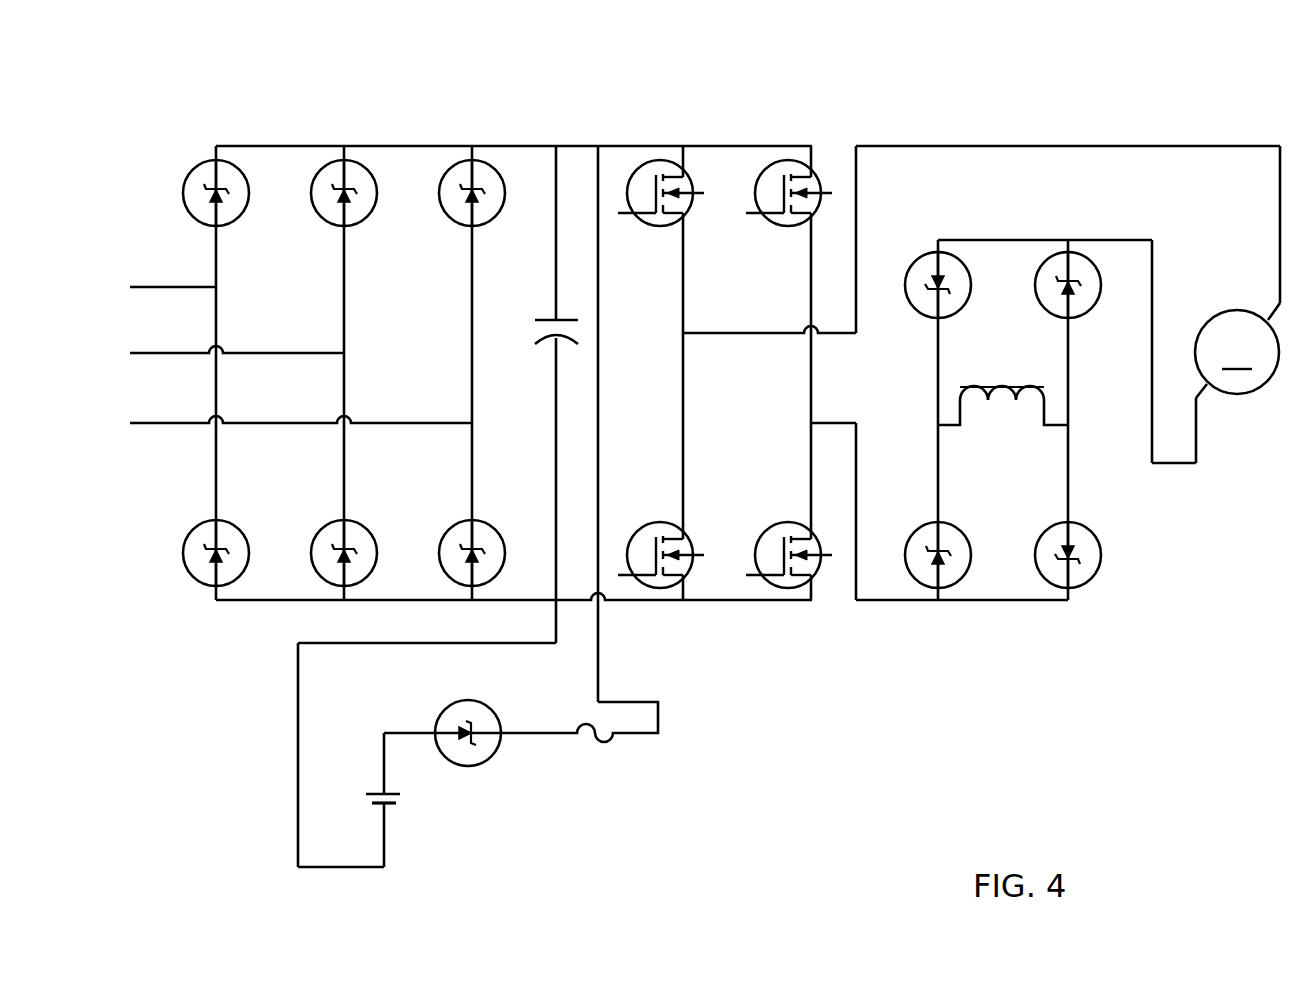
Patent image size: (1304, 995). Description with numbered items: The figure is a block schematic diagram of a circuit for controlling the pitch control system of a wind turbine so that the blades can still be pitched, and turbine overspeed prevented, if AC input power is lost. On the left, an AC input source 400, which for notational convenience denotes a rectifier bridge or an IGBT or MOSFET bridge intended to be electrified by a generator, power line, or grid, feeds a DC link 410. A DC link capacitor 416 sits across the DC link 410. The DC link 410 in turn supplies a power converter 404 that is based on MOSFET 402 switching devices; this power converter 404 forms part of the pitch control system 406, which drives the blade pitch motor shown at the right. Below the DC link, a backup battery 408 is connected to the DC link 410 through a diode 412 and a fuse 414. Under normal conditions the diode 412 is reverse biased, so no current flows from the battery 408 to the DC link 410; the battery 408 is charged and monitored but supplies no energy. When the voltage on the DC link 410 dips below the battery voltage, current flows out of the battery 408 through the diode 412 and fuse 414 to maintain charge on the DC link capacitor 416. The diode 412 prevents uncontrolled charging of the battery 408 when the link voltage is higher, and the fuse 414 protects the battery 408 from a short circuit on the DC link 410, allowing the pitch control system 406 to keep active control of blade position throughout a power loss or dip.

The AC input source 400 is at (418, 124).
The MOSFET 402 is at (690, 217).
The power converter 404 is at (737, 320).
The pitch control system 406 is at (1300, 626).
The backup battery 408 is at (405, 805).
The DC link 410 is at (574, 146).
The diode 412 is at (491, 766).
The fuse 414 is at (612, 745).
The DC link capacitor 416 is at (545, 317).